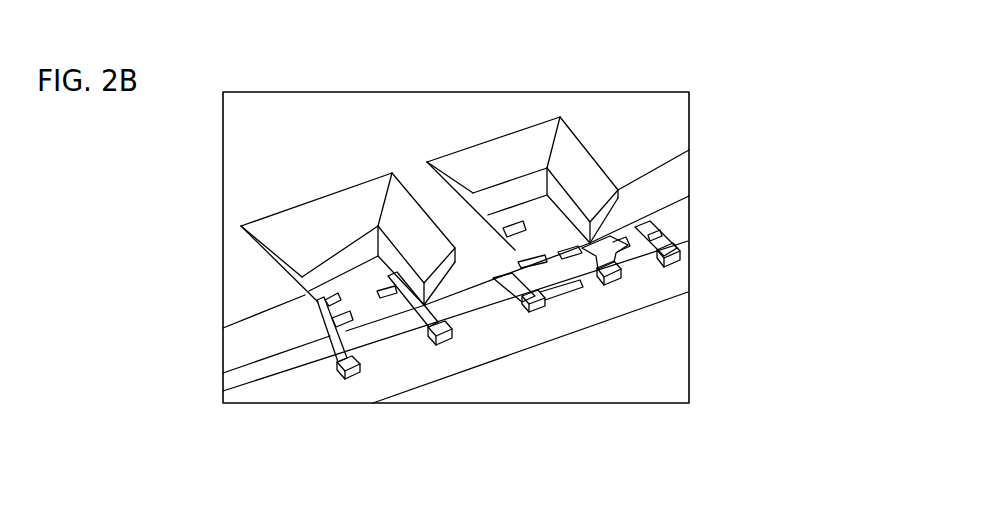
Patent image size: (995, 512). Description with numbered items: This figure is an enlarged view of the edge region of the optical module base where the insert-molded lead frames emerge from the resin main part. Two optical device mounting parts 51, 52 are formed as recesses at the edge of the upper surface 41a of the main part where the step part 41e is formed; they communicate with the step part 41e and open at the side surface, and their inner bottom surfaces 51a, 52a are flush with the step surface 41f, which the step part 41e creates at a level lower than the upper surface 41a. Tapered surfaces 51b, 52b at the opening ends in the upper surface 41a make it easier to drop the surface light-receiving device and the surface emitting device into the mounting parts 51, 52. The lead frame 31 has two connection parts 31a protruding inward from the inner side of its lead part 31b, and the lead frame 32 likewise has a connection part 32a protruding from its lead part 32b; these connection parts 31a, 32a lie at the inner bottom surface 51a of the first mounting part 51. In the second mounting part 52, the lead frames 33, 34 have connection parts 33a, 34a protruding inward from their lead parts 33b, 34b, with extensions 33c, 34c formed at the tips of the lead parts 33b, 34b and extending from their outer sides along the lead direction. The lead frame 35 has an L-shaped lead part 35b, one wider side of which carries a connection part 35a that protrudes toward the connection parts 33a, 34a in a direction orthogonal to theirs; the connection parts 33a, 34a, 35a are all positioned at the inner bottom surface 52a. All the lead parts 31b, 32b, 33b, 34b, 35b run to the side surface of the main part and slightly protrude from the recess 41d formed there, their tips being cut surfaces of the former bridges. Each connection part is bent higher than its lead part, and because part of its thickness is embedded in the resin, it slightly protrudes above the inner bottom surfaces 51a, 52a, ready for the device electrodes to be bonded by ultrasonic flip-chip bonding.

The lead frame 31 is at (267, 379).
The connection part 31a is at (347, 315).
The lead part 31b is at (347, 378).
The lead frame 32 is at (434, 381).
The connection part 32a is at (396, 300).
The lead part 32b is at (448, 340).
The lead frame 33 is at (570, 371).
The connection part 33a is at (582, 287).
The lead part 33b is at (540, 312).
The extension 33c is at (515, 293).
The lead frame 34 is at (675, 260).
The connection part 34a is at (582, 250).
The lead part 34b is at (620, 259).
The extension 34c is at (625, 233).
The lead frame 35 is at (635, 163).
The connection part 35a is at (511, 222).
The lead part 35b is at (656, 236).
The upper surface 41a is at (260, 168).
The recess 41d is at (289, 392).
The step part 41e is at (240, 343).
The step surface 41f is at (257, 378).
The optical device mounting part 51 is at (348, 173).
The inner bottom surface 51a is at (353, 272).
The tapered surface 51b is at (410, 218).
The optical device mounting part 52 is at (553, 139).
The inner bottom surface 52a is at (570, 247).
The tapered surface 52b is at (575, 162).